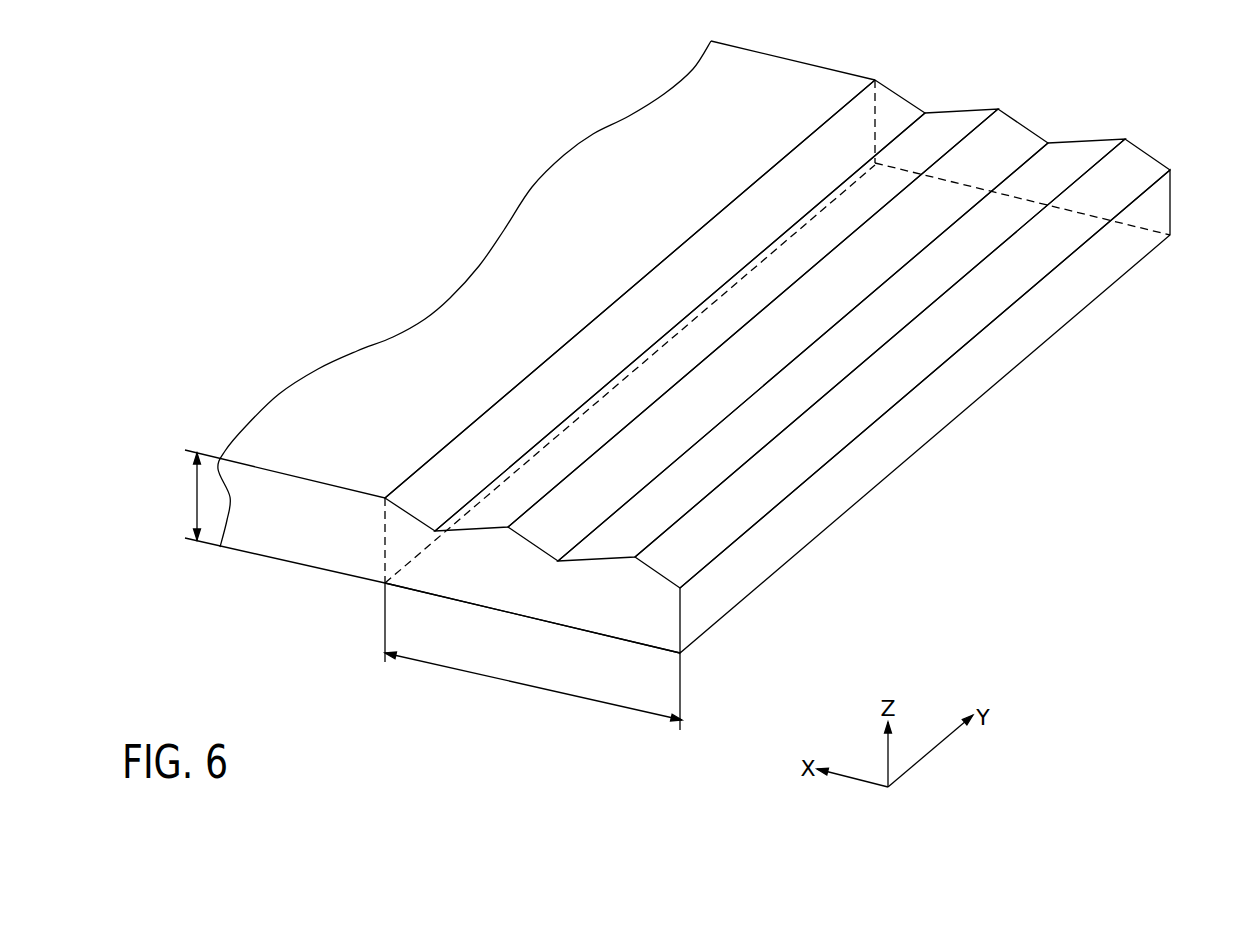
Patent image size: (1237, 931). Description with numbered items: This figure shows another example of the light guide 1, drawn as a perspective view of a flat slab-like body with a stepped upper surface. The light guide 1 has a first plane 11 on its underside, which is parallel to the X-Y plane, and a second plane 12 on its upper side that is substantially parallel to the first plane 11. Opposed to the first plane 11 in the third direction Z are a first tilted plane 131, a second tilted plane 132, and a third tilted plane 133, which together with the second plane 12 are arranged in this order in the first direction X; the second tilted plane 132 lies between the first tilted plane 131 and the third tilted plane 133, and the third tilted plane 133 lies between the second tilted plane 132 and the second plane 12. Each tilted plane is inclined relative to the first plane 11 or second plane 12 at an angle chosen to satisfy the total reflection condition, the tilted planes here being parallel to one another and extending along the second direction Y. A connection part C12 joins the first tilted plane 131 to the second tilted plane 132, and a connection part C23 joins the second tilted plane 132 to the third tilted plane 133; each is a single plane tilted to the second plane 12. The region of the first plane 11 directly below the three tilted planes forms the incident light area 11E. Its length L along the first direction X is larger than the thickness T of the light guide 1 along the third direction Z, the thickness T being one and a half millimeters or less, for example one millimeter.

The light guide 1 is at (1173, 197).
The first plane 11 is at (291, 567).
The incident light area 11E is at (387, 590).
The second plane 12 is at (571, 186).
The first tilted plane 131 is at (1128, 165).
The second tilted plane 132 is at (1007, 140).
The third tilted plane 133 is at (888, 117).
The connection part C12 is at (1070, 160).
The connection part C23 is at (947, 130).
The thickness T is at (195, 496).
The length L is at (533, 687).